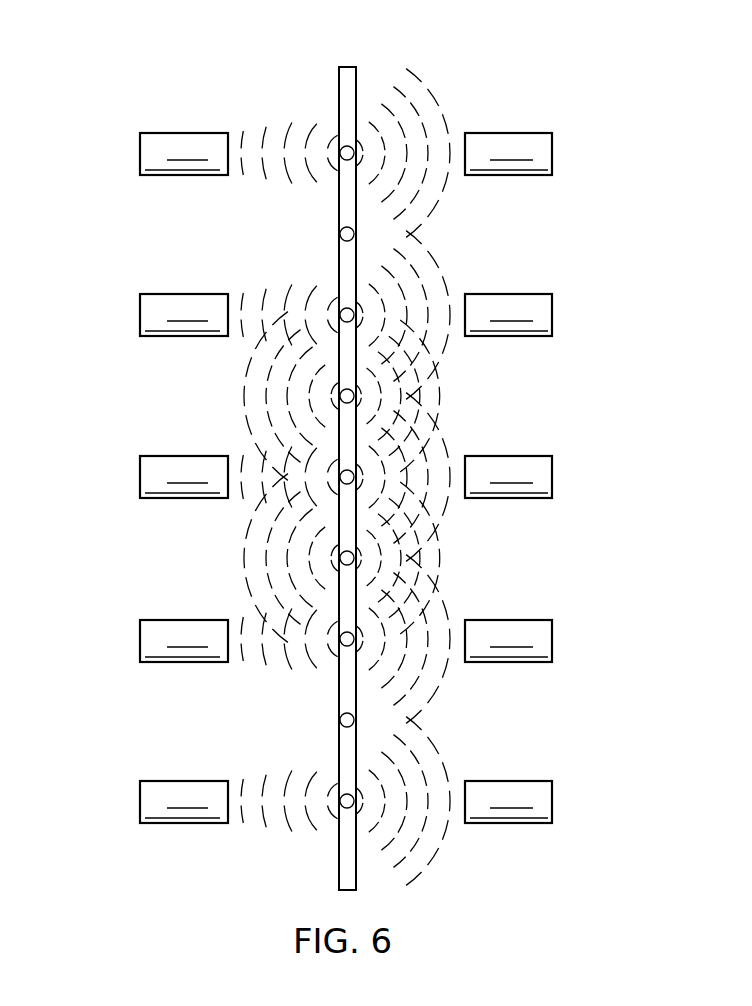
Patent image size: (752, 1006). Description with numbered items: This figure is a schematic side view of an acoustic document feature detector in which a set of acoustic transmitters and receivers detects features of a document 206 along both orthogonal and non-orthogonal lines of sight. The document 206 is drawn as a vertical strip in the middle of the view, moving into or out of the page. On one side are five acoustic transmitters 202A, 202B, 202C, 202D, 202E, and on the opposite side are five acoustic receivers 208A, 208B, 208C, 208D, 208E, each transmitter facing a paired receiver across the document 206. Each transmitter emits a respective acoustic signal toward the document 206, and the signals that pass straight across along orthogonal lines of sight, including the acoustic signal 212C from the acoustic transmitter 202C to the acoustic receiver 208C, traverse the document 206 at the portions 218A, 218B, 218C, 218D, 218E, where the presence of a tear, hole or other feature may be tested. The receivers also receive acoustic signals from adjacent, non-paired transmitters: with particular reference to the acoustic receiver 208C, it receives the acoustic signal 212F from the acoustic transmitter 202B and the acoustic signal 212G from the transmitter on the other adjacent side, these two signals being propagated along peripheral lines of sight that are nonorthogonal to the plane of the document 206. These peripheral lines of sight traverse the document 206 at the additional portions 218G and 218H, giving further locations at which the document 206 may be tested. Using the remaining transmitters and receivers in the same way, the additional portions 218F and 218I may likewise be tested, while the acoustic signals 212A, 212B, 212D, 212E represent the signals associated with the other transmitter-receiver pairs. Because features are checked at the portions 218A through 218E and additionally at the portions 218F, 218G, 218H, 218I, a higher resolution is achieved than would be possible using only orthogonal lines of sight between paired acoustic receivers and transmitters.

The document 206 is at (345, 67).
The acoustic transmitter 202A is at (140, 153).
The acoustic transmitter 202B is at (140, 314).
The acoustic transmitter 202C is at (140, 476).
The acoustic transmitter 202D is at (140, 641).
The acoustic transmitter 202E is at (140, 801).
The acoustic receiver 208A is at (552, 152).
The acoustic receiver 208B is at (552, 314).
The acoustic receiver 208C is at (552, 476).
The acoustic receiver 208D is at (552, 640).
The acoustic receiver 208E is at (552, 802).
The portion of the document 218A is at (349, 143).
The portion of the document 218B is at (312, 273).
The portion of the document 218C is at (343, 473).
The portion of the document 218D is at (338, 678).
The portion of the document 218E is at (340, 836).
The additional portion of the document 218F is at (357, 215).
The additional portion of the document 218G is at (341, 393).
The additional portion of the document 218H is at (342, 568).
The additional portion of the document 218I is at (357, 702).
The acoustic signal 212A is at (443, 118).
The acoustic signal 212B is at (443, 280).
The acoustic signal 212C is at (443, 442).
The acoustic signal 212D is at (443, 672).
The acoustic signal 212E is at (443, 836).
The acoustic signal 212F is at (438, 398).
The acoustic signal 212G is at (438, 556).